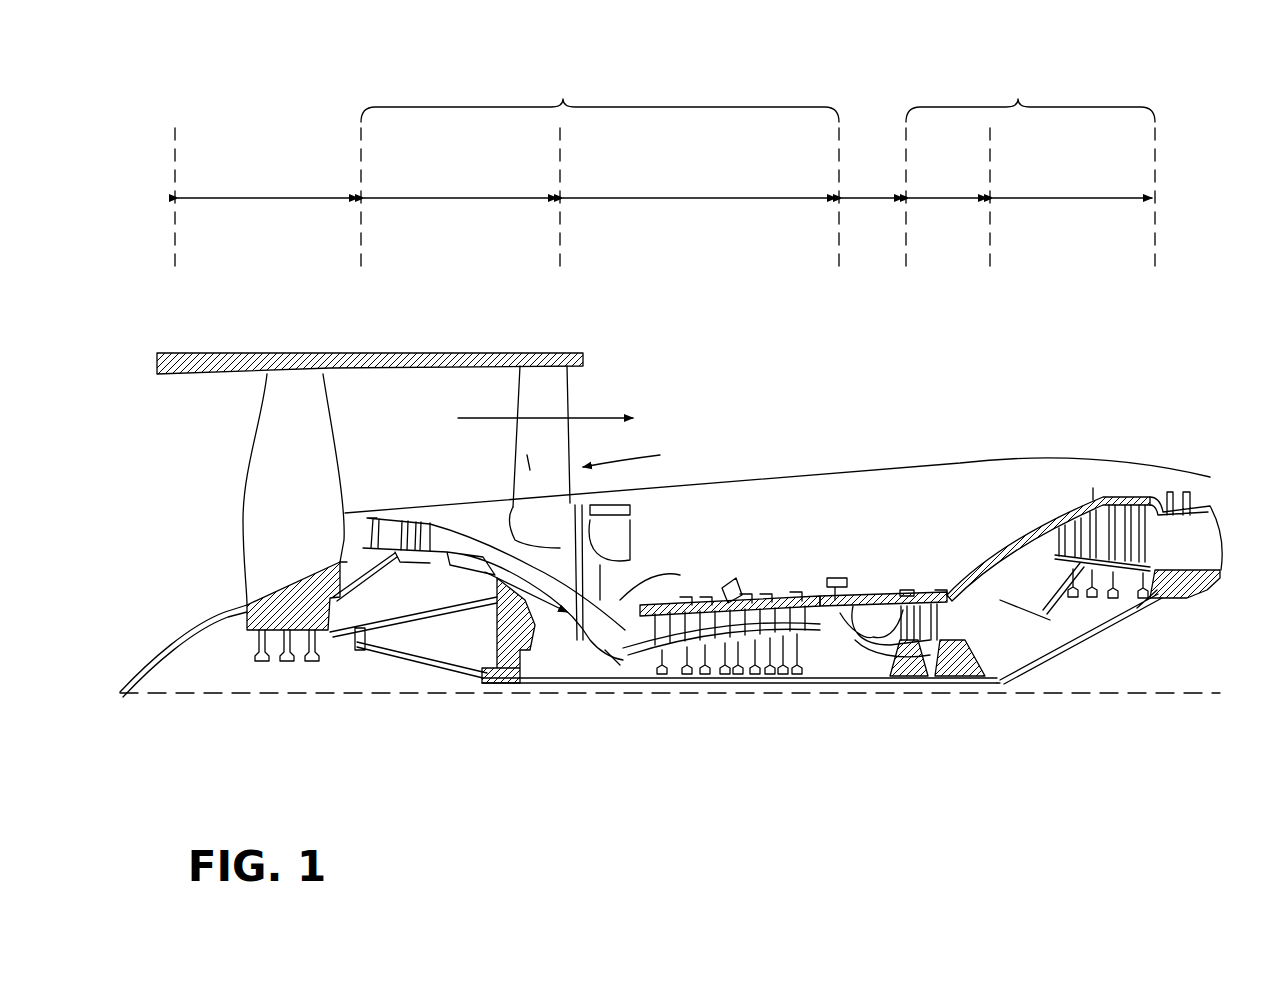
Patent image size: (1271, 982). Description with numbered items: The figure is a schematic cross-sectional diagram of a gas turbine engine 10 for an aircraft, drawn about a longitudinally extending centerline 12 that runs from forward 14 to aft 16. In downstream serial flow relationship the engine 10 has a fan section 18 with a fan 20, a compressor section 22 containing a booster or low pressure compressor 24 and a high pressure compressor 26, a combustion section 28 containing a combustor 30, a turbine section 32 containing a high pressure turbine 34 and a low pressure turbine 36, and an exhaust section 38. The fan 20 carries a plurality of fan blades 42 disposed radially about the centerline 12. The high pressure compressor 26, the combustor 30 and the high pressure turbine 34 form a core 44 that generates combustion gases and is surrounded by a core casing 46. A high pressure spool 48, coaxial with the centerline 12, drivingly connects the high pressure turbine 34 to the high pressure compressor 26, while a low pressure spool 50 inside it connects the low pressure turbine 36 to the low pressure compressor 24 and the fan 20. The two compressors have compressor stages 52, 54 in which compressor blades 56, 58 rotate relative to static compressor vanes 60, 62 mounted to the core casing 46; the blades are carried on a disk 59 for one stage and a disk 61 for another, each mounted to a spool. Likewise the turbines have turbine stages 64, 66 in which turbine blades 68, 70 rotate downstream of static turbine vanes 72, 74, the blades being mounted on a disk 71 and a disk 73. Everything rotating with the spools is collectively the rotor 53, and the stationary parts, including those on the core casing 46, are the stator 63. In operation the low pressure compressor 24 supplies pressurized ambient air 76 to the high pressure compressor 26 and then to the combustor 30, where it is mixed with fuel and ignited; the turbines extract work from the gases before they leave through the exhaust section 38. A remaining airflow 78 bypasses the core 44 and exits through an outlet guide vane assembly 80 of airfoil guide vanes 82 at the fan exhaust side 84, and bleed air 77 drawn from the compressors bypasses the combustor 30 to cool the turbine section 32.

The gas turbine engine 10 is at (860, 352).
The centerline 12 is at (268, 695).
The forward 14 is at (127, 477).
The aft 16 is at (1238, 552).
The fan section 18 is at (268, 186).
The fan 20 is at (210, 547).
The compressor section 22 is at (600, 97).
The low pressure compressor 24 is at (460, 186).
The high pressure compressor 26 is at (699, 186).
The combustion section 28 is at (872, 181).
The combustor 30 is at (875, 610).
The turbine section 32 is at (1030, 97).
The high pressure turbine 34 is at (948, 186).
The low pressure turbine 36 is at (1072, 186).
The exhaust section 38 is at (1225, 515).
The fan blades 42 is at (318, 428).
The core 44 is at (817, 512).
The core casing 46 is at (1040, 520).
The high pressure spool 48 is at (850, 655).
The low pressure spool 50 is at (500, 685).
The compressor stages 52 is at (488, 546).
The rotor 53 is at (455, 567).
The compressor stages 54 is at (721, 629).
The compressor blades 56 is at (395, 520).
The compressor blades 58 is at (668, 612).
The disk 59 is at (395, 562).
The static compressor vanes 60 is at (375, 518).
The disk 61 is at (627, 667).
The static compressor vanes 62 is at (650, 612).
The stator 63 is at (610, 650).
The turbine stages 64 is at (932, 616).
The turbine stages 66 is at (1129, 496).
The turbine blades 68 is at (937, 604).
The turbine blades 70 is at (1145, 510).
The disk 71 is at (920, 645).
The static turbine vanes 72 is at (905, 604).
The disk 73 is at (1050, 630).
The static turbine vanes 74 is at (1127, 510).
The pressurized ambient air 76 is at (553, 546).
The bleed air 77 is at (720, 585).
The airflow 78 is at (458, 418).
The outlet guide vane assembly 80 is at (635, 457).
The airfoil guide vanes 82 is at (527, 455).
The fan exhaust side 84 is at (607, 382).